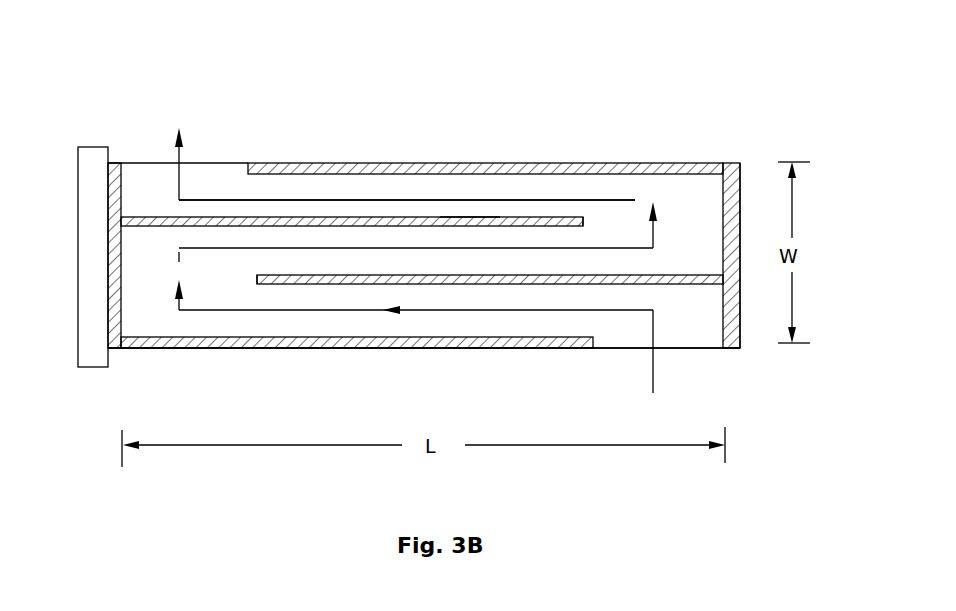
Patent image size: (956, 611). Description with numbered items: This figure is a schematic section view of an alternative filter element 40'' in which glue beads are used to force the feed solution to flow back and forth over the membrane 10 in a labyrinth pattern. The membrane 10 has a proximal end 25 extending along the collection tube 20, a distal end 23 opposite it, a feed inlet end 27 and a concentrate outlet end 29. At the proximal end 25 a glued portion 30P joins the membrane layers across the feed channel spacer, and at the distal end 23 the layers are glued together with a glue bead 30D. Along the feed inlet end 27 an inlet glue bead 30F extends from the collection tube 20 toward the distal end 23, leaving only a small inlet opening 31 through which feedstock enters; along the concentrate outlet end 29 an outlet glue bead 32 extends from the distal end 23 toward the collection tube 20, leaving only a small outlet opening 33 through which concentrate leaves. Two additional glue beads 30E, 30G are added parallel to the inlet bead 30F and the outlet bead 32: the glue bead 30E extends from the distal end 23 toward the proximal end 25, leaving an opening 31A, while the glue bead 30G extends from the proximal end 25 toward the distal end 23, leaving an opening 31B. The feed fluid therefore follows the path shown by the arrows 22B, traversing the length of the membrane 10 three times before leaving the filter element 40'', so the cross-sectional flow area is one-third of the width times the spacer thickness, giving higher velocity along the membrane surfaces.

The membrane 10 is at (545, 183).
The collection tube 20 is at (95, 215).
The labyrinth flow path 22B is at (191, 165).
The distal end 23 is at (742, 163).
The proximal end 25 is at (110, 315).
The feed inlet end 27 is at (355, 348).
The concentrate outlet end 29 is at (382, 163).
The glue bead 30D is at (740, 193).
The glue bead 30E is at (660, 275).
The inlet glue bead 30F is at (293, 350).
The glue bead 30G is at (470, 217).
The glued portion 30P is at (124, 164).
The inlet opening 31 is at (717, 350).
The opening 31A is at (257, 280).
The opening 31B is at (585, 220).
The outlet glue bead 32 is at (457, 163).
The outlet opening 33 is at (240, 163).
The filter element 40'' is at (455, 181).